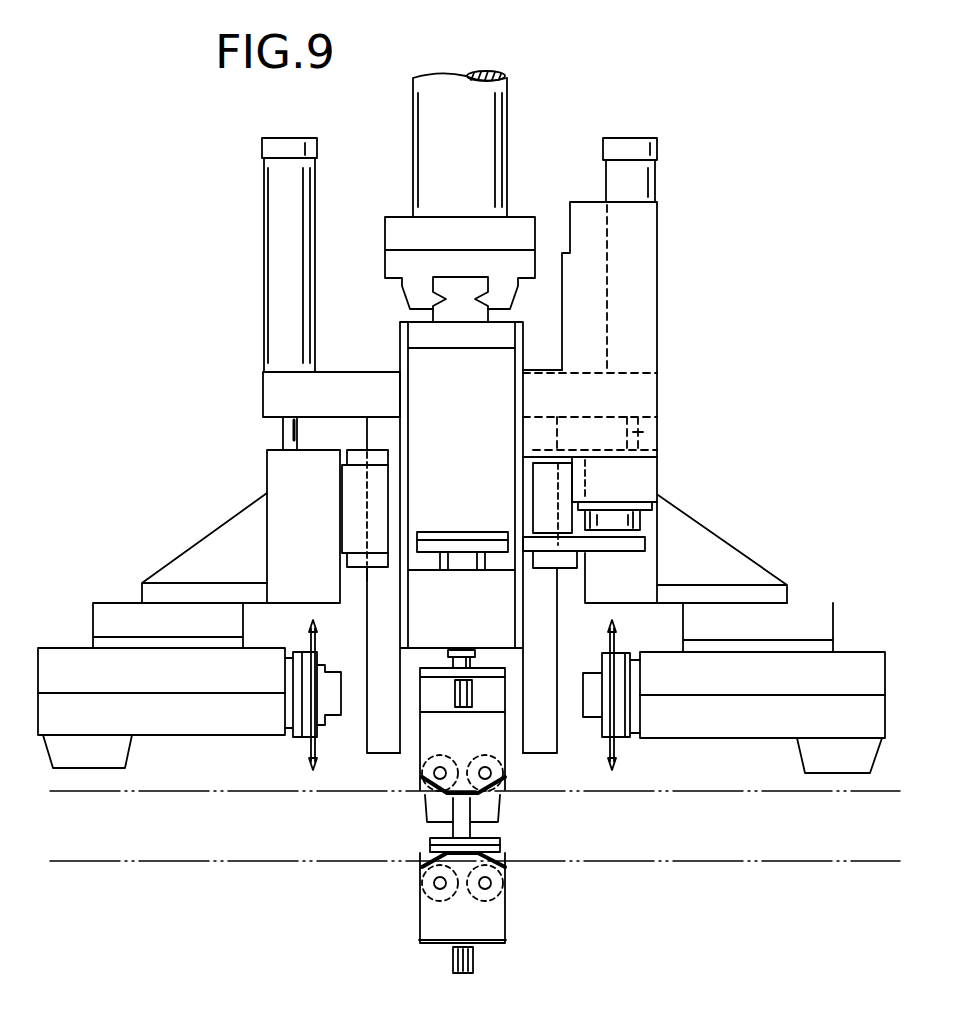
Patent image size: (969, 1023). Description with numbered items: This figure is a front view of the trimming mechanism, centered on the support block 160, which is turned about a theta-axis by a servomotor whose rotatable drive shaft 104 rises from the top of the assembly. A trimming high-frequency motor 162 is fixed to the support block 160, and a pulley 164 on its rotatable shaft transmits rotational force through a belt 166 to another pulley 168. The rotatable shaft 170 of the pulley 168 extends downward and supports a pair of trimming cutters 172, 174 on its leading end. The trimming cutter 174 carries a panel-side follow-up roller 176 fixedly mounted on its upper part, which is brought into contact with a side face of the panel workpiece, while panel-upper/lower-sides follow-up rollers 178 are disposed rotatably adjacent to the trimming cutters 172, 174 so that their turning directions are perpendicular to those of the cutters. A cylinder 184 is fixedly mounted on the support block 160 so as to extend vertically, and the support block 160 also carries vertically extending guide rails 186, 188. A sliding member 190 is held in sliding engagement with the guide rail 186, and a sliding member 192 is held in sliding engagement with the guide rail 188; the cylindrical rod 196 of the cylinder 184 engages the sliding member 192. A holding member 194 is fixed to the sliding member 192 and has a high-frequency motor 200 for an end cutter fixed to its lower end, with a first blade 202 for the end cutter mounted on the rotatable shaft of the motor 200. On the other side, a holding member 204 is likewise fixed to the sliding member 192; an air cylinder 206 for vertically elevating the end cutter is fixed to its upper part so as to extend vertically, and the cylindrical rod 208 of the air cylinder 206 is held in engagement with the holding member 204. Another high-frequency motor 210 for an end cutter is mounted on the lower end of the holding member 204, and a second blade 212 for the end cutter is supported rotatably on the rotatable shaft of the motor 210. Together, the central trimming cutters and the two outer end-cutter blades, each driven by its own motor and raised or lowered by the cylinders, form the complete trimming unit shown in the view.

The rotatable drive shaft 104 is at (477, 135).
The support block 160 is at (396, 330).
The trimming high-frequency motor 162 is at (643, 322).
The pulley 164 is at (642, 532).
The belt 166 is at (580, 543).
The pulley 168 is at (477, 547).
The rotatable shaft 170 is at (457, 556).
The trimming cutter 172 is at (438, 798).
The trimming cutter 174 is at (505, 857).
The panel-side follow-up roller 176 is at (422, 855).
The panel-upper/lower-sides follow-up roller 178 is at (498, 780).
The cylinder 184 is at (637, 187).
The guide rail 186 is at (553, 638).
The guide rail 188 is at (387, 617).
The sliding member 190 is at (545, 482).
The sliding member 192 is at (372, 483).
The holding member 194 is at (713, 560).
The cylindrical rod 196 is at (645, 432).
The high-frequency motor 200 is at (843, 668).
The first blade 202 is at (618, 750).
The holding member 204 is at (215, 555).
The air cylinder 206 is at (282, 220).
The cylindrical rod 208 is at (283, 432).
The high-frequency motor 210 is at (185, 717).
The second blade 212 is at (307, 750).